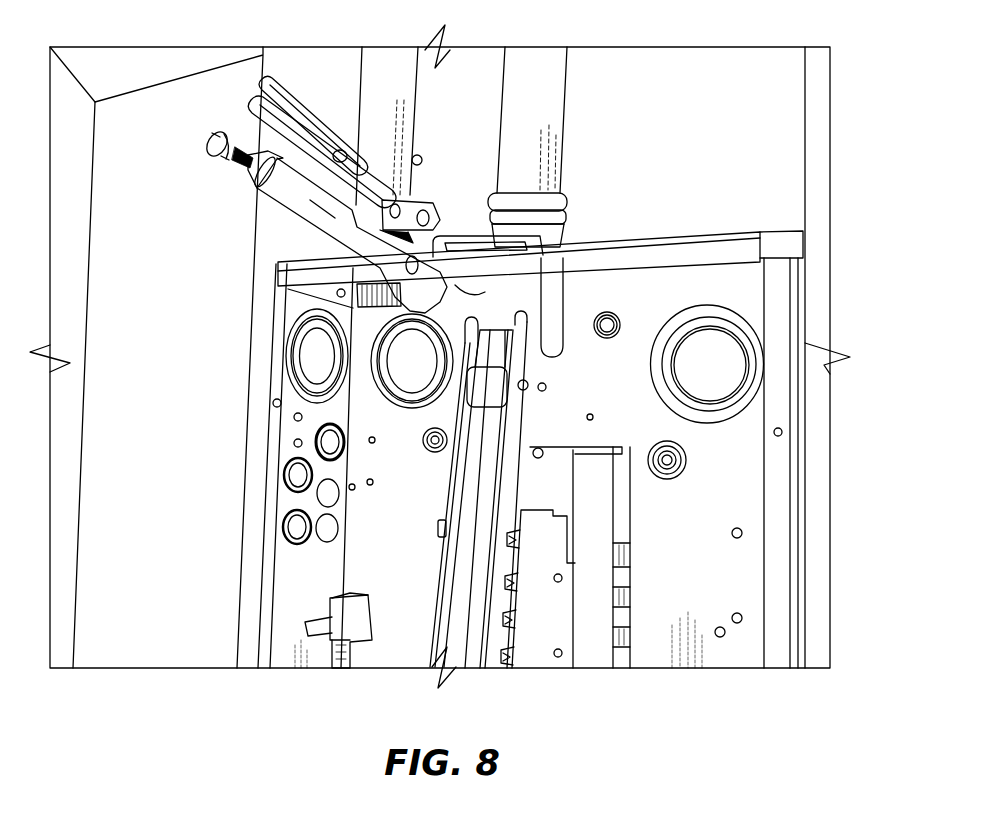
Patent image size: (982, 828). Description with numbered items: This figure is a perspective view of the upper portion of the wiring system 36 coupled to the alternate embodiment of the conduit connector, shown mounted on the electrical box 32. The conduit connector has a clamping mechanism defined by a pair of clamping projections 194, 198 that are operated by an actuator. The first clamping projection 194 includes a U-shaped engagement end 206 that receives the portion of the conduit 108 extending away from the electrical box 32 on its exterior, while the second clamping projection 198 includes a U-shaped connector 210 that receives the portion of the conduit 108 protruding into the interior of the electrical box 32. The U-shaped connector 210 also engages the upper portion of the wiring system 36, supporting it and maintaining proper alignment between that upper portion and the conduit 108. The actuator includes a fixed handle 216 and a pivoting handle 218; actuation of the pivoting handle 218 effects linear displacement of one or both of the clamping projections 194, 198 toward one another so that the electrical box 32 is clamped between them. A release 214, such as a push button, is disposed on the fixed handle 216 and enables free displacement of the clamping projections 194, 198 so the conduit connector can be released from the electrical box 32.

The electrical box 32 is at (787, 220).
The wiring system 36 is at (537, 487).
The conduit 108 is at (554, 62).
The first clamping projection 194 is at (463, 232).
The second clamping projection 198 is at (472, 292).
The U-shaped engagement end 206 is at (573, 227).
The U-shaped connector 210 is at (590, 322).
The release 214 is at (257, 97).
The fixed handle 216 is at (305, 200).
The pivoting handle 218 is at (276, 76).